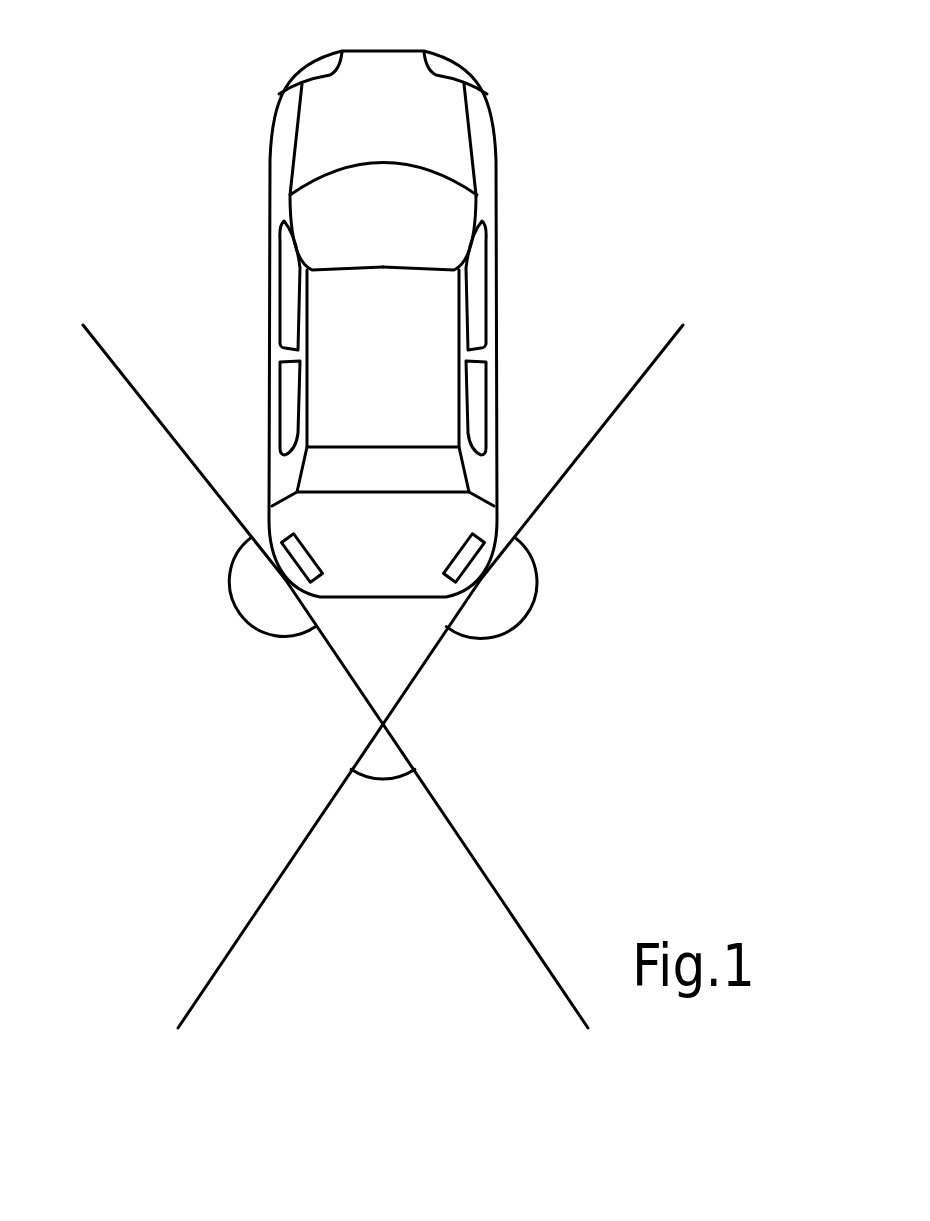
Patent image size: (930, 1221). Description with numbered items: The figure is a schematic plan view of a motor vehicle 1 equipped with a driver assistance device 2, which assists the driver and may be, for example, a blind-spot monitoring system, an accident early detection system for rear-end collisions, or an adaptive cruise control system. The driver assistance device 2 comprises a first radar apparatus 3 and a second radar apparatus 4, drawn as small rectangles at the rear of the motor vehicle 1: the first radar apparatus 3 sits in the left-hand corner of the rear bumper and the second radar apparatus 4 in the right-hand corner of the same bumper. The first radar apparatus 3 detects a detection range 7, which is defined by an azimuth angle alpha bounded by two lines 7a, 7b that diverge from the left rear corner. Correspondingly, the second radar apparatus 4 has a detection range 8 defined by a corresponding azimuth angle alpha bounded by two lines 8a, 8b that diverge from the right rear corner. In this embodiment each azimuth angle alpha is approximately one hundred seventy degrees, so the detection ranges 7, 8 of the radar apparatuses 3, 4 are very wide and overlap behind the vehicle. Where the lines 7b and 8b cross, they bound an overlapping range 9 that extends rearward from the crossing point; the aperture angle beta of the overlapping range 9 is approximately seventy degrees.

The motor vehicle 1 is at (269, 352).
The driver assistance device 2 is at (462, 512).
The first radar apparatus 3 is at (305, 567).
The second radar apparatus 4 is at (470, 558).
The detection range 7 is at (158, 618).
The line 7a is at (132, 388).
The line 7b is at (553, 977).
The detection range 8 is at (581, 576).
The line 8a is at (667, 349).
The line 8b is at (211, 978).
The overlapping range 9 is at (391, 893).